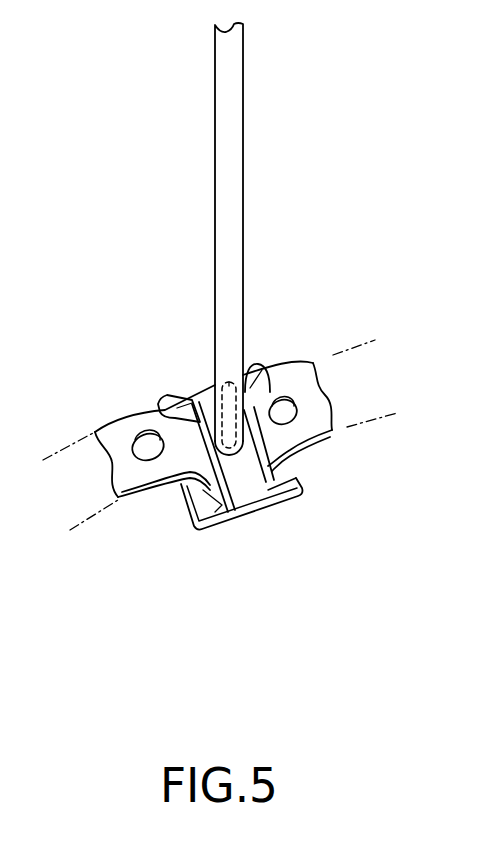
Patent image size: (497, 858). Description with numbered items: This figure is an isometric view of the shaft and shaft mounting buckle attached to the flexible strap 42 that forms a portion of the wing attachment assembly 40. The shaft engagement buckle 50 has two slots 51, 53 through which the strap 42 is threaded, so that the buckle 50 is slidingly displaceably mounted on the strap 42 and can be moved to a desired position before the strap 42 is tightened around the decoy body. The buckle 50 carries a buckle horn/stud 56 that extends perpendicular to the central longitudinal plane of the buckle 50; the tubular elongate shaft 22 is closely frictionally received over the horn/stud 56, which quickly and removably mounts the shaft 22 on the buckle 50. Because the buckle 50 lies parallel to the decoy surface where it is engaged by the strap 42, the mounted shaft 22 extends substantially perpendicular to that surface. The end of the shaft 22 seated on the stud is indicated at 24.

The elongate shaft 22 is at (281, 239).
The rod end 24 is at (236, 382).
The wing attachment assembly 40 is at (216, 533).
The flexible strap 42 is at (320, 442).
The shaft engagement buckle 50 is at (256, 448).
The slot 51 is at (183, 407).
The slot 53 is at (268, 378).
The buckle horn/stud 56 is at (215, 403).